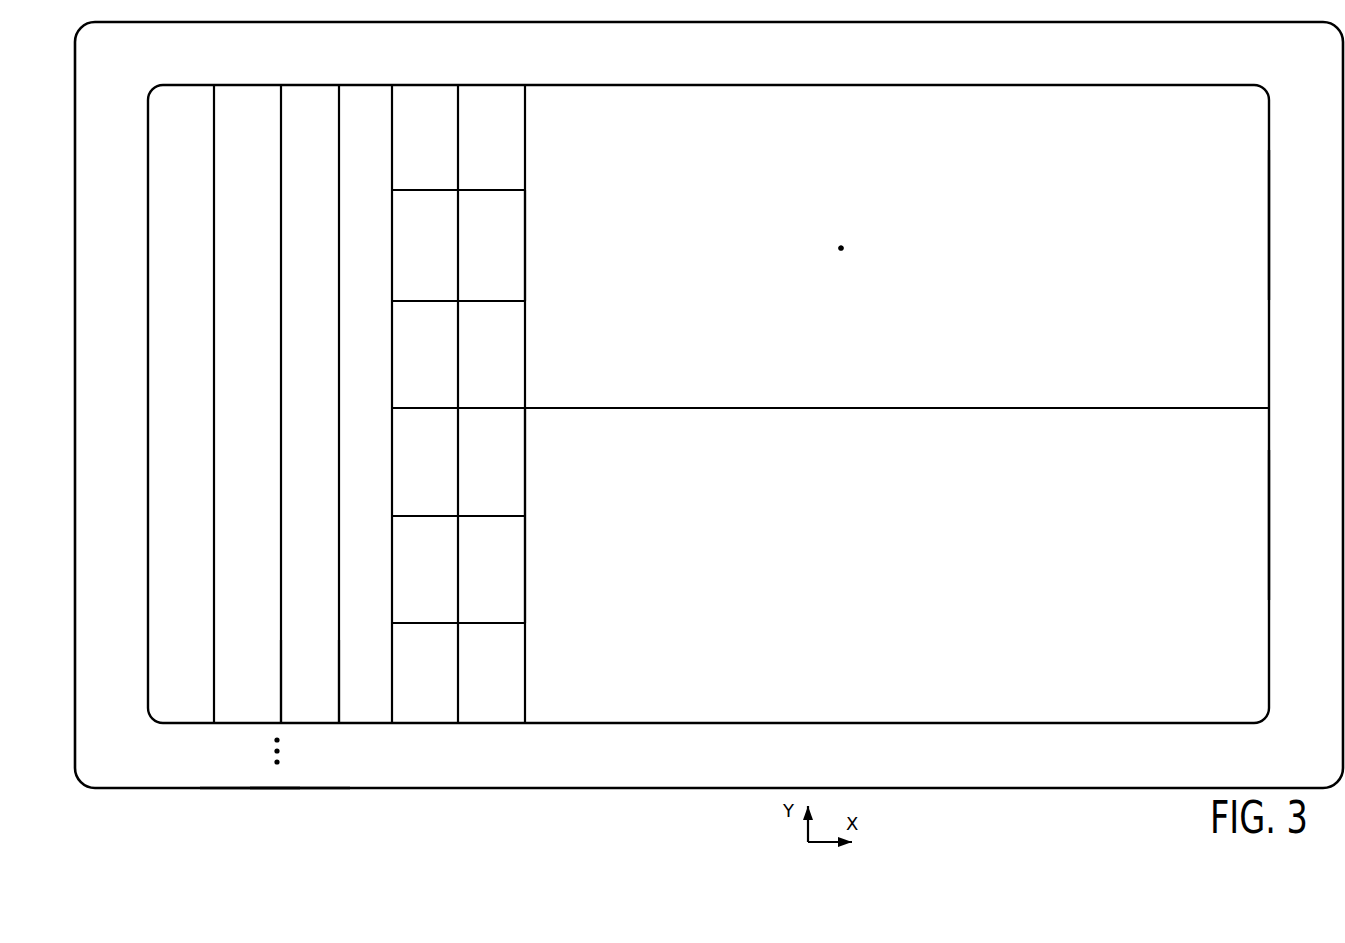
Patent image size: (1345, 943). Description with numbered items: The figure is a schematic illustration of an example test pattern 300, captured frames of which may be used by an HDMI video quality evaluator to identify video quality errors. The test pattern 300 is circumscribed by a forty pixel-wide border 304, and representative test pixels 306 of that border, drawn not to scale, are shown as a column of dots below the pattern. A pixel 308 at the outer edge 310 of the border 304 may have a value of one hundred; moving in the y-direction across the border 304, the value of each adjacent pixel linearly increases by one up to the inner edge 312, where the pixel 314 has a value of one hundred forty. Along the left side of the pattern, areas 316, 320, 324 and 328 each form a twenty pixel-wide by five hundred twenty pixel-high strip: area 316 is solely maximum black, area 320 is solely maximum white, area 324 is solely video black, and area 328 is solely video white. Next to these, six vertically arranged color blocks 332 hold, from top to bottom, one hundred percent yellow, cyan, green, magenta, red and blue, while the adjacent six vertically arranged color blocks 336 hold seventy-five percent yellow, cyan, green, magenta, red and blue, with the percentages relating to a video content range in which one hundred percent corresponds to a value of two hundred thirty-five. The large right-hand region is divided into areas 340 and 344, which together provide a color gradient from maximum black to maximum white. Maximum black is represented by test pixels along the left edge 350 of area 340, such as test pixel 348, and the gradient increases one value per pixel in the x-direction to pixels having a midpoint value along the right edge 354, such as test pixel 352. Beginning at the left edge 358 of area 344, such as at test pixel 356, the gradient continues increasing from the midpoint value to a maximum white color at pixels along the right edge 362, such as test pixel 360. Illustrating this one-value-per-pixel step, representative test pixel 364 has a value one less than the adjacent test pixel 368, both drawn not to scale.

The test pattern 300 is at (793, 52).
The border 304 is at (600, 768).
The representative test pixels 306 is at (250, 743).
The pixel 308 is at (278, 788).
The outer edge 310 is at (288, 789).
The inner edge 312 is at (340, 723).
The pixel 314 is at (277, 723).
The area 316 is at (181, 84).
The area 320 is at (247, 84).
The area 324 is at (311, 84).
The area 328 is at (369, 84).
The vertically arranged color blocks 332 is at (430, 84).
The vertically arranged color blocks 336 is at (491, 84).
The area 340 is at (864, 226).
The area 344 is at (864, 530).
The test pixel 348 is at (526, 277).
The left edge 350 is at (526, 202).
The test pixel 352 is at (1268, 268).
The right edge 354 is at (1268, 201).
The test pixel 356 is at (526, 556).
The left edge 358 is at (526, 491).
The test pixel 360 is at (1268, 557).
The right edge 362 is at (1268, 503).
The representative test pixel 364 is at (841, 249).
The test pixel 368 is at (841, 249).